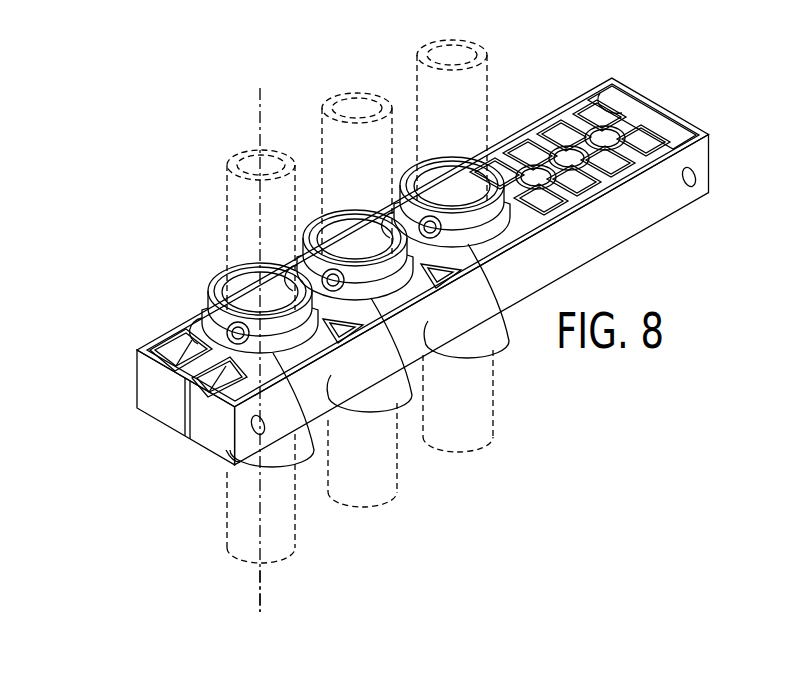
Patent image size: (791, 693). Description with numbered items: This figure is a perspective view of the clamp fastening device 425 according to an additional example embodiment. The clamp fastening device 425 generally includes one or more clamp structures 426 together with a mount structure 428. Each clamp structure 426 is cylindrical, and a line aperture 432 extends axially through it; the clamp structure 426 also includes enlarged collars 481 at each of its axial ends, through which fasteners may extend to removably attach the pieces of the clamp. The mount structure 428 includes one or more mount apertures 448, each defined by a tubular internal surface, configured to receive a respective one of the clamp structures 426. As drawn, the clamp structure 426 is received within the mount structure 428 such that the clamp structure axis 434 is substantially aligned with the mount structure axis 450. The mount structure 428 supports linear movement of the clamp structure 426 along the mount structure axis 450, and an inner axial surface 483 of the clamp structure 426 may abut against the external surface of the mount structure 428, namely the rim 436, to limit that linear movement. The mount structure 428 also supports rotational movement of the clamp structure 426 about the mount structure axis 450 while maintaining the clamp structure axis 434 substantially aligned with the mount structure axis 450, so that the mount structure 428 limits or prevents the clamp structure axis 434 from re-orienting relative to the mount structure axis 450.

The clamp fastening device 425 is at (377, 288).
The clamp structure 426 is at (312, 255).
The mount structure 428 is at (170, 401).
The line aperture 432 is at (270, 296).
The clamp structure axis 434 is at (258, 108).
The rim 436 is at (330, 443).
The mount aperture 448 is at (427, 348).
The mount structure axis 450 is at (260, 590).
The enlarged collar 481 is at (244, 262).
The inner axial surface 483 is at (213, 443).